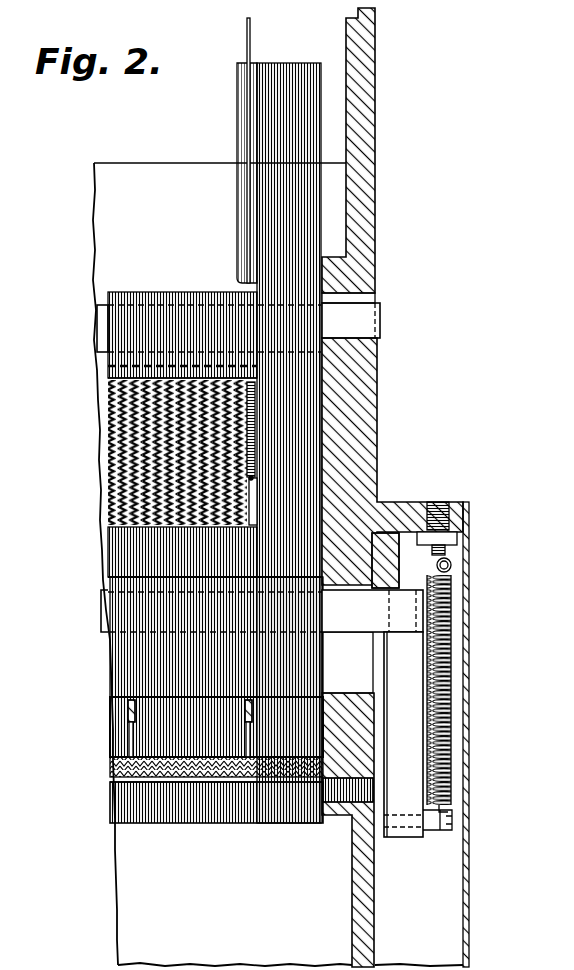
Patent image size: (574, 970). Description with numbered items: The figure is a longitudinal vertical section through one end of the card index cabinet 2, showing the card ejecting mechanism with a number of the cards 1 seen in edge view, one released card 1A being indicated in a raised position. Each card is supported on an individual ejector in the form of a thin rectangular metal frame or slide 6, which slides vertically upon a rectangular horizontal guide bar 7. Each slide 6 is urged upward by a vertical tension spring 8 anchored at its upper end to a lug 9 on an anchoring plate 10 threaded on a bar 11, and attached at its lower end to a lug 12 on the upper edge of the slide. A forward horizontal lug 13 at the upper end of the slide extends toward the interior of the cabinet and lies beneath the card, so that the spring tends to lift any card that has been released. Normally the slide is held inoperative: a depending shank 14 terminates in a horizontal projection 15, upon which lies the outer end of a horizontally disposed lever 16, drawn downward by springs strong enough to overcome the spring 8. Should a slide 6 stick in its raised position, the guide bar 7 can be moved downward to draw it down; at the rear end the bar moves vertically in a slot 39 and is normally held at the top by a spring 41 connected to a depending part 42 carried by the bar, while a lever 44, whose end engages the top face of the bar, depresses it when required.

The cards 1 is at (240, 123).
The released card 1A is at (247, 40).
The cabinet 2 is at (100, 235).
The ejector slide 6 is at (110, 665).
The guide bar 7 is at (360, 612).
The tension spring 8 is at (108, 455).
The lug 9 is at (108, 368).
The anchoring plate 10 is at (195, 315).
The bar 11 is at (97, 316).
The lug 12 is at (150, 548).
The forward horizontal lug 13 is at (118, 580).
The depending shank 14 is at (130, 728).
The horizontal projection 15 is at (240, 805).
The lever 16 is at (112, 772).
The slot 39 is at (348, 662).
The spring 41 is at (452, 637).
The depending part 42 is at (405, 810).
The lever 44 is at (385, 552).